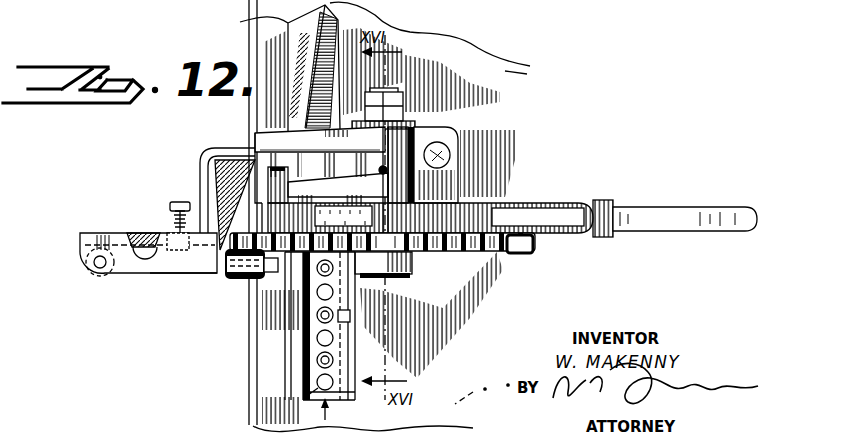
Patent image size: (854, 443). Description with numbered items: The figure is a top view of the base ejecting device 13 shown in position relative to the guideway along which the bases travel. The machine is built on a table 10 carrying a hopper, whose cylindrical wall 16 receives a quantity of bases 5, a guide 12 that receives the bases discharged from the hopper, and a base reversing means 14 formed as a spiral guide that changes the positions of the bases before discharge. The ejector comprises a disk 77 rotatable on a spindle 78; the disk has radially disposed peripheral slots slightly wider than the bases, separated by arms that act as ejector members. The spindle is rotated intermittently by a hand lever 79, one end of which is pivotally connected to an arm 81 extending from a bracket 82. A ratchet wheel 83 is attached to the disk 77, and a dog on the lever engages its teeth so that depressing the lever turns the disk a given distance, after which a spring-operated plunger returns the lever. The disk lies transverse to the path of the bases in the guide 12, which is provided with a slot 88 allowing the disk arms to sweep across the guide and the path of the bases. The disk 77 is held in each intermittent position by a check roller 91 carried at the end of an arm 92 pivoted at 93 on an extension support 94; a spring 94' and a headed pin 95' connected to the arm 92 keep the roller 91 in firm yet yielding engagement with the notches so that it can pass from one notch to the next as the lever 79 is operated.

The base 5 is at (300, 390).
The table 10 is at (478, 72).
The guide 12 is at (300, 393).
The base ejector device 13 is at (200, 297).
The base reversing means 14 is at (298, 33).
The cylindrical wall 16 is at (341, 335).
The disk 77 is at (522, 252).
The spindle 78 is at (385, 93).
The hand lever 79 is at (668, 215).
The arm 81 is at (308, 195).
The bracket 82 is at (447, 140).
The ratchet wheel 83 is at (482, 180).
The slot 88 is at (283, 303).
The check roller 91 is at (234, 310).
The arm 92 is at (150, 278).
The pivot 93 is at (93, 272).
The extension support 94 is at (207, 202).
The spring 94' is at (154, 222).
The pin 95' is at (175, 202).